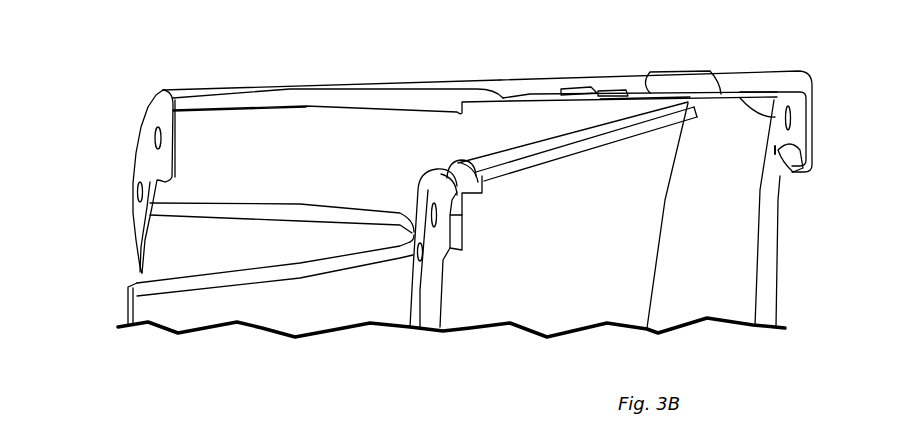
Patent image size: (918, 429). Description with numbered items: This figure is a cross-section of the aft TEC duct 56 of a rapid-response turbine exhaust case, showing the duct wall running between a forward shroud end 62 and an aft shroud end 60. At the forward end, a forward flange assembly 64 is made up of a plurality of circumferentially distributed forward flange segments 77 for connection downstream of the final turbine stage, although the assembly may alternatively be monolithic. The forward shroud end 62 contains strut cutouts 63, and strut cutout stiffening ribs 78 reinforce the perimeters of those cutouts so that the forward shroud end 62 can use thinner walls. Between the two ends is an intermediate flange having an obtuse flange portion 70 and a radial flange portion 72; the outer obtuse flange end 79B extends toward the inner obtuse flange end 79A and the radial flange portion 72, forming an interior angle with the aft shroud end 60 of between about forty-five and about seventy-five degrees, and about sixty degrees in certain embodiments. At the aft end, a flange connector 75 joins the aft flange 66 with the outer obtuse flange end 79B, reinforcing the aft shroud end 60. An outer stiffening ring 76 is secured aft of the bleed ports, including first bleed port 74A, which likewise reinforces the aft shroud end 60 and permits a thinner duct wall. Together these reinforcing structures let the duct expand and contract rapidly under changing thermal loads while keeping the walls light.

The aft TEC duct 56 is at (127, 74).
The aft shroud end 60 is at (763, 82).
The forward shroud end 62 is at (447, 81).
The strut cutouts 63 is at (264, 259).
The forward flange assembly 64 is at (132, 121).
The aft flange 66 is at (807, 132).
The obtuse flange portion 70 is at (606, 132).
The radial flange portion 72 is at (432, 241).
The first bleed port 74A is at (584, 88).
The flange connector 75 is at (760, 115).
The outer stiffening ring 76 is at (680, 80).
The forward flange segment 77 is at (162, 162).
The strut cutout stiffening ribs 78 is at (286, 100).
The inner obtuse flange end 79A is at (488, 162).
The outer obtuse flange end 79B is at (635, 106).